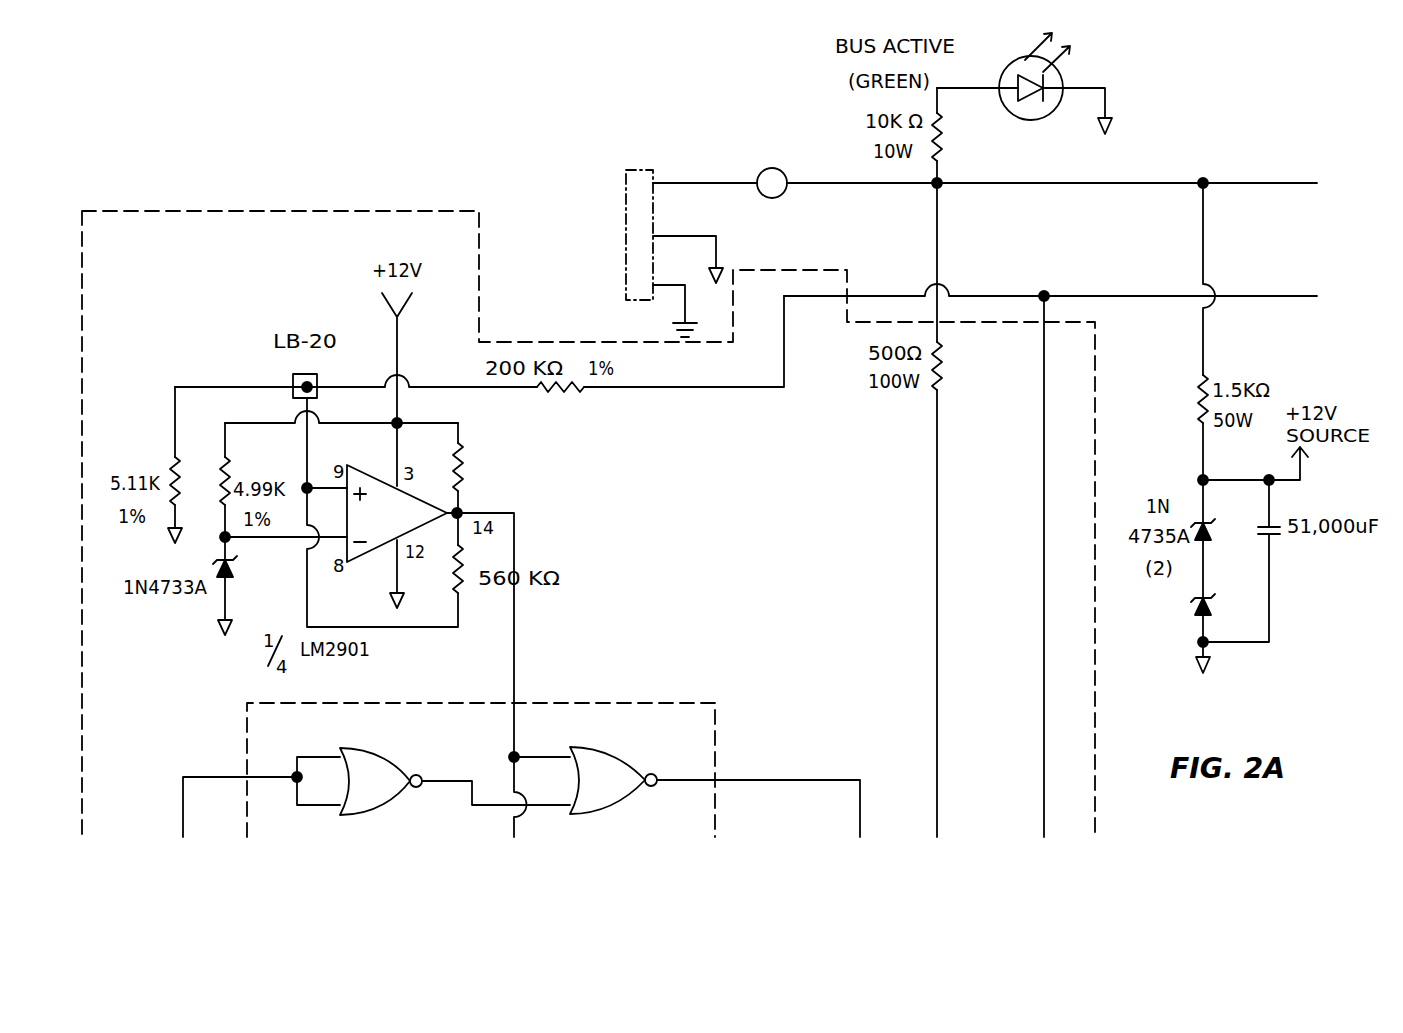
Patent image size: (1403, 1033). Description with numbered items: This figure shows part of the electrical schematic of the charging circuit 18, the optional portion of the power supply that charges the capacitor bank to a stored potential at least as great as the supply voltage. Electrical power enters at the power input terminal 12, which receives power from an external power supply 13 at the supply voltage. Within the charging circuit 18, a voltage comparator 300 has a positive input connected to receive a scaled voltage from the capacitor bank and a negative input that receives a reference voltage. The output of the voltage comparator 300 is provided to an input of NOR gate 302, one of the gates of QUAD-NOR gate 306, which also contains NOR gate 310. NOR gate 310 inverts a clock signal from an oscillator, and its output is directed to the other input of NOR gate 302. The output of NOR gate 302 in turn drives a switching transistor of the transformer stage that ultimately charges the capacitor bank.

The charging circuit 18 is at (178, 212).
The power input terminal 12 is at (782, 167).
The power supply 13 is at (626, 188).
The voltage comparator 300 is at (428, 502).
The QUAD-NOR gate 306 is at (720, 712).
The NOR gate 310 is at (383, 755).
The NOR gate 302 is at (617, 755).